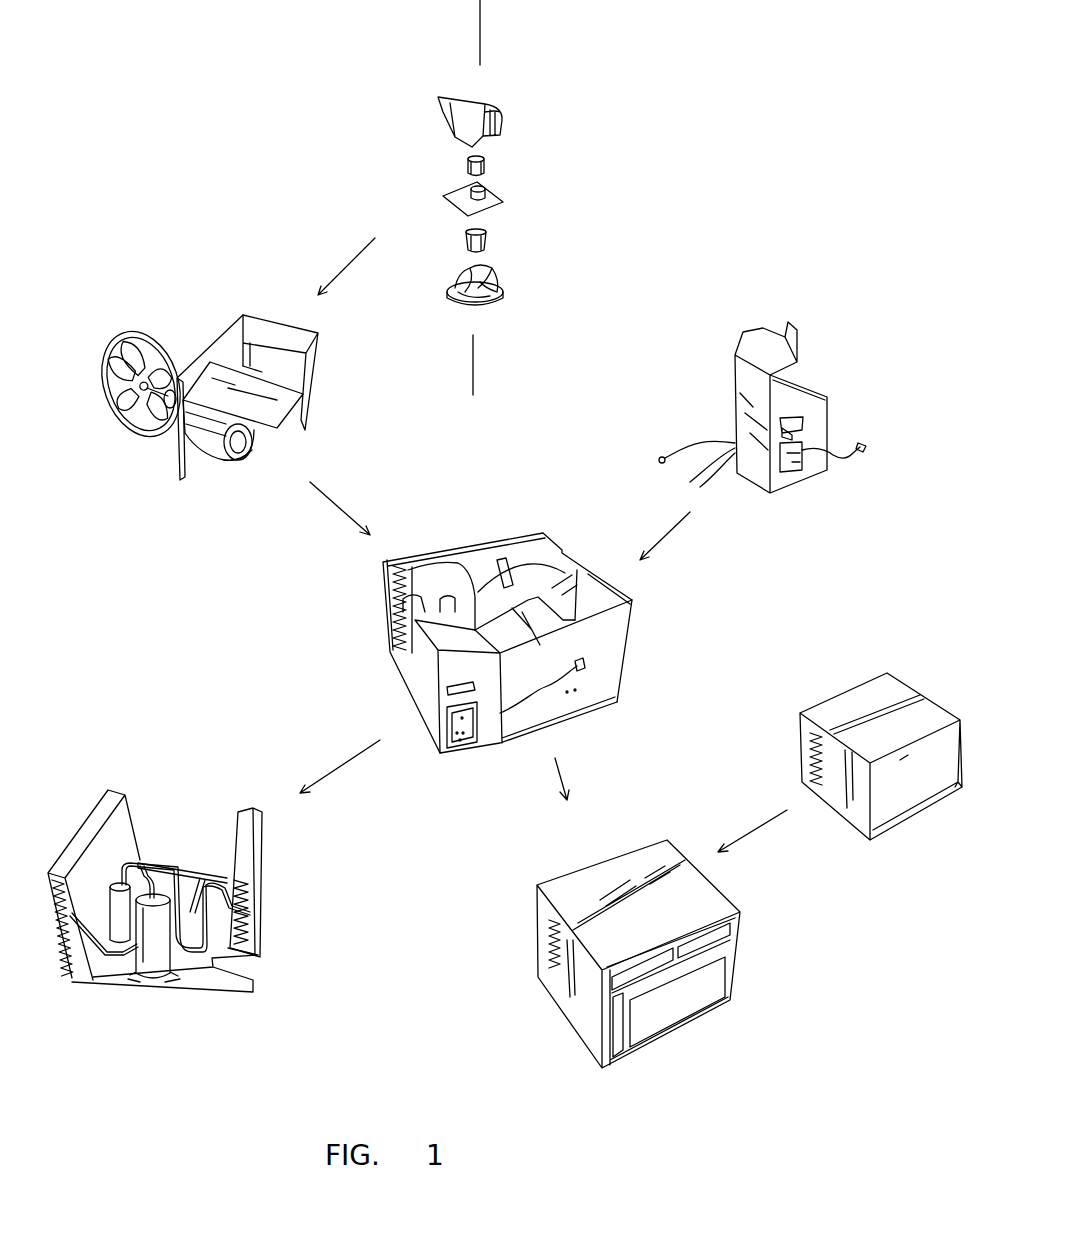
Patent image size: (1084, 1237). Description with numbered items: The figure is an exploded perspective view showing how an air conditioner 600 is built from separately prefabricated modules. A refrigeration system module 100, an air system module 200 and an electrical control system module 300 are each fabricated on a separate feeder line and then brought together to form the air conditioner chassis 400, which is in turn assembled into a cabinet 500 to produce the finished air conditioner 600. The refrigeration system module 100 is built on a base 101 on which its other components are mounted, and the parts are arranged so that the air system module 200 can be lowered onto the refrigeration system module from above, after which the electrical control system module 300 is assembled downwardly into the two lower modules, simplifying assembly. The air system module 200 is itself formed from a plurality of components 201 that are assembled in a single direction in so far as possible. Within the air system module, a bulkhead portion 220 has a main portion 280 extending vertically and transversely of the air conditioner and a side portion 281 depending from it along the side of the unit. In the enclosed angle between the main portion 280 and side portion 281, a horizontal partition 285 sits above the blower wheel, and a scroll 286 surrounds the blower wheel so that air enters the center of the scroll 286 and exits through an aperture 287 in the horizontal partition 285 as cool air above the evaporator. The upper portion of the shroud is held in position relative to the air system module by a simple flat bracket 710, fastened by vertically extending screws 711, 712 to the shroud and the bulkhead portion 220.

The refrigeration system module 100 is at (188, 913).
The base 101 is at (247, 977).
The air system module 200 is at (152, 526).
The components 201 is at (520, 249).
The bulkhead portion 220 is at (548, 588).
The main portion 280 is at (188, 470).
The side portion 281 is at (307, 339).
The horizontal partition 285 is at (283, 392).
The scroll 286 is at (235, 470).
The aperture 287 is at (254, 350).
The electrical control system module 300 is at (730, 395).
The air conditioner chassis 400 is at (506, 622).
The cabinet 500 is at (798, 694).
The air conditioner 600 is at (558, 1036).
The flat bracket 710 is at (470, 565).
The screw 711 is at (500, 560).
The screw 712 is at (468, 592).